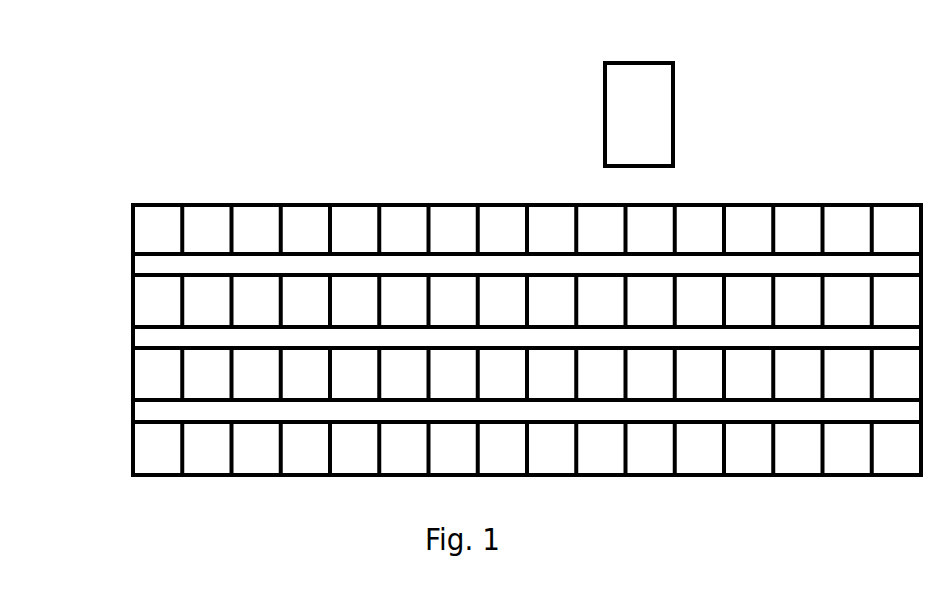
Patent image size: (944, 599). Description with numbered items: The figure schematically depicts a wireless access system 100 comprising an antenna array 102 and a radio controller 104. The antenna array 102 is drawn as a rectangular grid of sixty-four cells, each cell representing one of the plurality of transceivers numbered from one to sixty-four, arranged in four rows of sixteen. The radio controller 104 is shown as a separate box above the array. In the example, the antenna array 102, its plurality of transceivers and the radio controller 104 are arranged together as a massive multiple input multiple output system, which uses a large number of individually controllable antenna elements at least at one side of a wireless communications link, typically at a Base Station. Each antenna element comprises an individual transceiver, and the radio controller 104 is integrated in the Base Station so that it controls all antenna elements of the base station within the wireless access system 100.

The wireless access system 100 is at (252, 56).
The antenna array 102 is at (134, 207).
The radio controller 104 is at (639, 114).